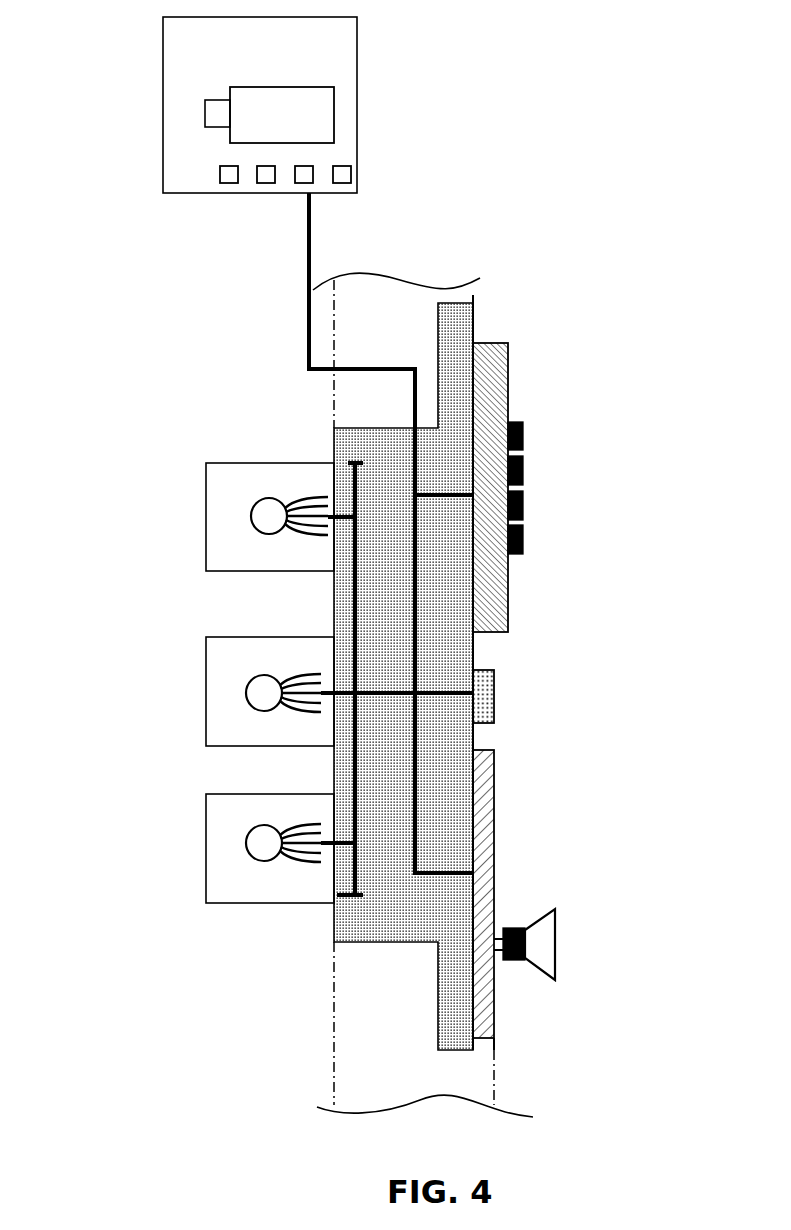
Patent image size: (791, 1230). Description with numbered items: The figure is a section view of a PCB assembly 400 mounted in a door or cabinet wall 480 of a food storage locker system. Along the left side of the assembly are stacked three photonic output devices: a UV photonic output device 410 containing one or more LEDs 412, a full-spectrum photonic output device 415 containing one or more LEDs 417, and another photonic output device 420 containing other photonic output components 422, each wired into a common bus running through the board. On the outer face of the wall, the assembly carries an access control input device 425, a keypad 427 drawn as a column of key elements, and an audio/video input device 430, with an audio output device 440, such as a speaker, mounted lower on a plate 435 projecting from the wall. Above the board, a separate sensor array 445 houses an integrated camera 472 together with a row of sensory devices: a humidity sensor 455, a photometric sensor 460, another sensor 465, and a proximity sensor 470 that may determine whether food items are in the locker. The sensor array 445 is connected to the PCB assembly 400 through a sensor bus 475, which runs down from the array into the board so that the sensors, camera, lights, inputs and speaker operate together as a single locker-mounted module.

The PCB assembly 400 is at (746, 200).
The UV photonic output device 410 is at (238, 491).
The LEDs 412 is at (257, 503).
The full-spectrum photonic output device 415 is at (297, 661).
The LEDs 417 is at (248, 680).
The other photonic output devices 420 is at (238, 822).
The other photonic output components 422 is at (248, 830).
The access control input device 425 is at (508, 610).
The keypad 427 is at (522, 424).
The audio/video input device 430 is at (494, 722).
The speaker mounting plate 435 is at (494, 1005).
The audio output device 440 is at (555, 960).
The sensor array 445 is at (238, 126).
The humidity sensor 455 is at (229, 183).
The photometric sensor 460 is at (266, 183).
The other sensor 465 is at (303, 165).
The proximity sensor 470 is at (350, 166).
The integrated camera 472 is at (205, 115).
The sensor bus 475 is at (305, 330).
The door or cabinet wall 480 is at (400, 273).